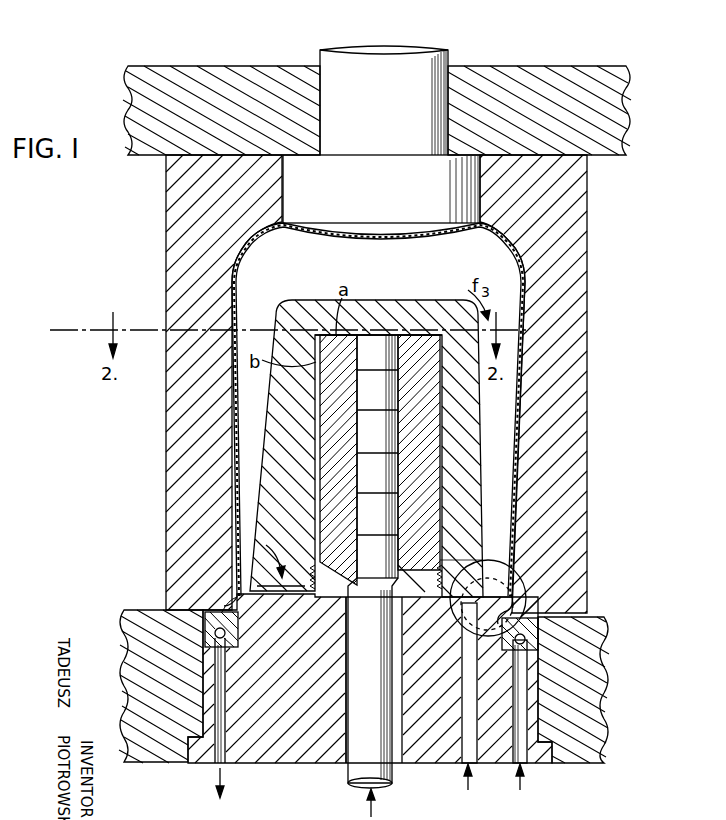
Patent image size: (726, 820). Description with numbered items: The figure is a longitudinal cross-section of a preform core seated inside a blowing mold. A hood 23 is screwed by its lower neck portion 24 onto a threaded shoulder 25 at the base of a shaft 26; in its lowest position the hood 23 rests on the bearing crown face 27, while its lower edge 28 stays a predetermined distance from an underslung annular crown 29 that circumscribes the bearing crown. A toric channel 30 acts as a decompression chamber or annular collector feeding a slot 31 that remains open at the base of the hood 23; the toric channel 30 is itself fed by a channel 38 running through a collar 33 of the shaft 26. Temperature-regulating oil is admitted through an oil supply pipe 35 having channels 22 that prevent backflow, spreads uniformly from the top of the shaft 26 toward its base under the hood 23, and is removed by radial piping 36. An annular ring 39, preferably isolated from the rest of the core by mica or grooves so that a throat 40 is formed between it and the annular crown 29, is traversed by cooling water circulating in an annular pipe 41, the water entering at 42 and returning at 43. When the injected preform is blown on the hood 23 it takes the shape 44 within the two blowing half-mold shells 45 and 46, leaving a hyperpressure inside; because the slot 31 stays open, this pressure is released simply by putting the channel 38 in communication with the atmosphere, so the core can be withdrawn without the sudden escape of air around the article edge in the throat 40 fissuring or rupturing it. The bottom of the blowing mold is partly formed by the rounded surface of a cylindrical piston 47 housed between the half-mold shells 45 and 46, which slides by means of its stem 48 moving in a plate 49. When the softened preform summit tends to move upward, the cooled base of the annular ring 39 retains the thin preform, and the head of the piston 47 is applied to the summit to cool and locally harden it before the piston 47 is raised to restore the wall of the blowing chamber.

The channels 22 is at (380, 446).
The hood 23 is at (416, 302).
The lower neck portion 24 is at (260, 554).
The threaded shoulder 25 is at (462, 566).
The shaft 26 is at (330, 403).
The bearing crown face 27 is at (243, 597).
The lower edge 28 is at (486, 596).
The underslung annular crown 29 is at (226, 606).
The toric channel 30 is at (516, 560).
The slot 31 is at (514, 574).
The collar 33 is at (428, 742).
The oil intake or supply pipe 35 is at (363, 463).
The radial piping 36 is at (345, 748).
The channel 38 is at (470, 788).
The annular ring 39 is at (586, 614).
The throat 40 is at (458, 616).
The annular pipe 41 is at (205, 630).
The water inlet 42 is at (522, 788).
The water return 43 is at (218, 770).
The blown preform shape 44 is at (246, 240).
The blowing half-mold shell 45 is at (176, 240).
The blowing half-mold shell 46 is at (588, 270).
The cylindrical piston 47 is at (366, 172).
The stem 48 is at (415, 76).
The plate 49 is at (560, 94).